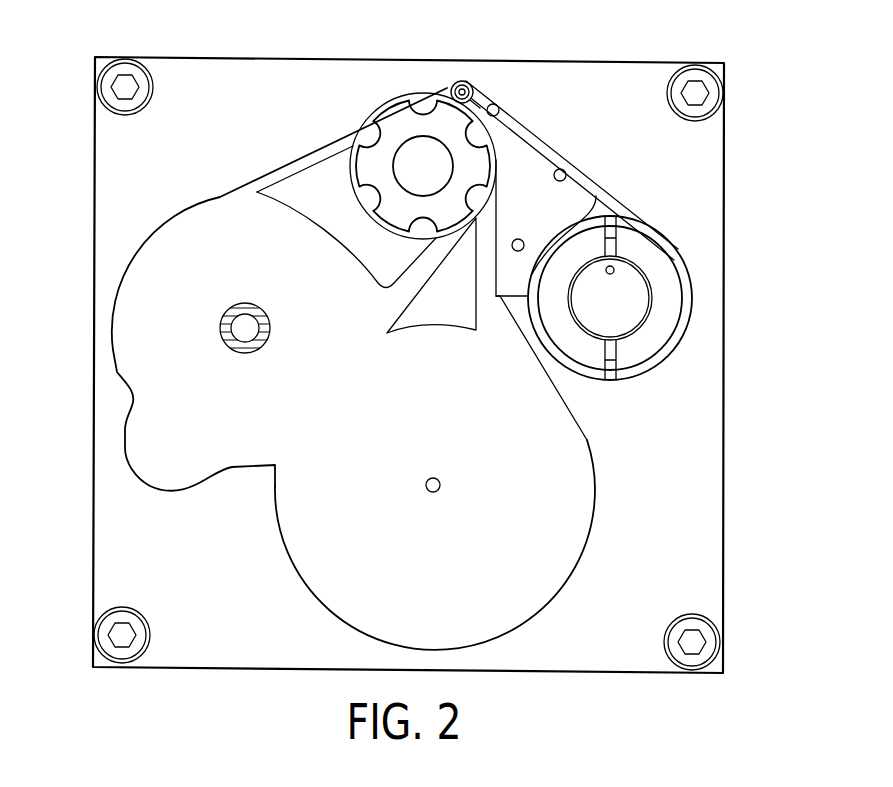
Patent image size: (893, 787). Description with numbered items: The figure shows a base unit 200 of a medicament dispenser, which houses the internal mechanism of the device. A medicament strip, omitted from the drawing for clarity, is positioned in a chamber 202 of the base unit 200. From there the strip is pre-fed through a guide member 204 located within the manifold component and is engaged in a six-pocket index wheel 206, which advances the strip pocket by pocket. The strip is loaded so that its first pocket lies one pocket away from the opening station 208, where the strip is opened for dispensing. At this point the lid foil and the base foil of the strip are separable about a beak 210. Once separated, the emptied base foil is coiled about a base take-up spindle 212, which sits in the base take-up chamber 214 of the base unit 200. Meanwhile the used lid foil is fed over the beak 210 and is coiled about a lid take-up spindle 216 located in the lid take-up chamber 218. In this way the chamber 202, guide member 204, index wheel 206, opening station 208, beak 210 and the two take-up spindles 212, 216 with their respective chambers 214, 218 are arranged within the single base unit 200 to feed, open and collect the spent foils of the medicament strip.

The base unit 200 is at (704, 686).
The chamber 202 is at (300, 523).
The guide member 204 is at (416, 93).
The six-pocket index wheel 206 is at (447, 165).
The opening station 208 is at (438, 82).
The beak 210 is at (478, 78).
The base take-up spindle 212 is at (261, 347).
The base take-up chamber 214 is at (130, 360).
The lid take-up spindle 216 is at (662, 262).
The lid take-up chamber 218 is at (625, 372).